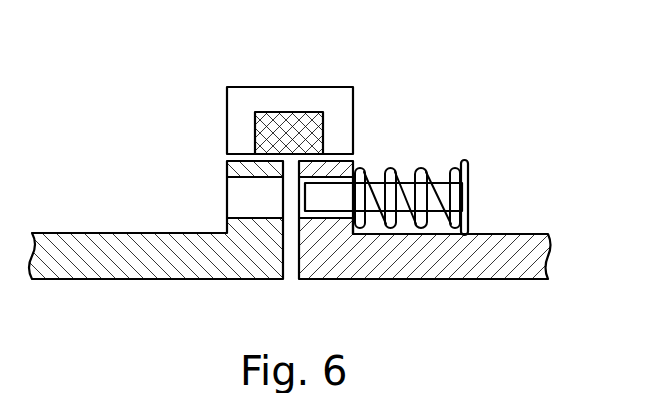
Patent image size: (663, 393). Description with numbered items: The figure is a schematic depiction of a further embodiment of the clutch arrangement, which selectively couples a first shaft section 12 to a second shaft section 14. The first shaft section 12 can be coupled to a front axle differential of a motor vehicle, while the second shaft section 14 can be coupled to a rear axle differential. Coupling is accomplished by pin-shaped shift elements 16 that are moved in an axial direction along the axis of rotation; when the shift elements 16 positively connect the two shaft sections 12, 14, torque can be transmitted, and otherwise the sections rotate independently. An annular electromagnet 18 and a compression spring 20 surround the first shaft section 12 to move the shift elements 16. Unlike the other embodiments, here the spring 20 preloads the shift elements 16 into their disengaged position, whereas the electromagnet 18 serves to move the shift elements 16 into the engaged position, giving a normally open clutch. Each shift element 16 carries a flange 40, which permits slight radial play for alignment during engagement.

The first shaft section 12 is at (476, 268).
The second shaft section 14 is at (92, 268).
The shift elements 16 is at (335, 192).
The electromagnet 18 is at (343, 97).
The compression spring 20 is at (424, 165).
The flange 40 is at (464, 160).